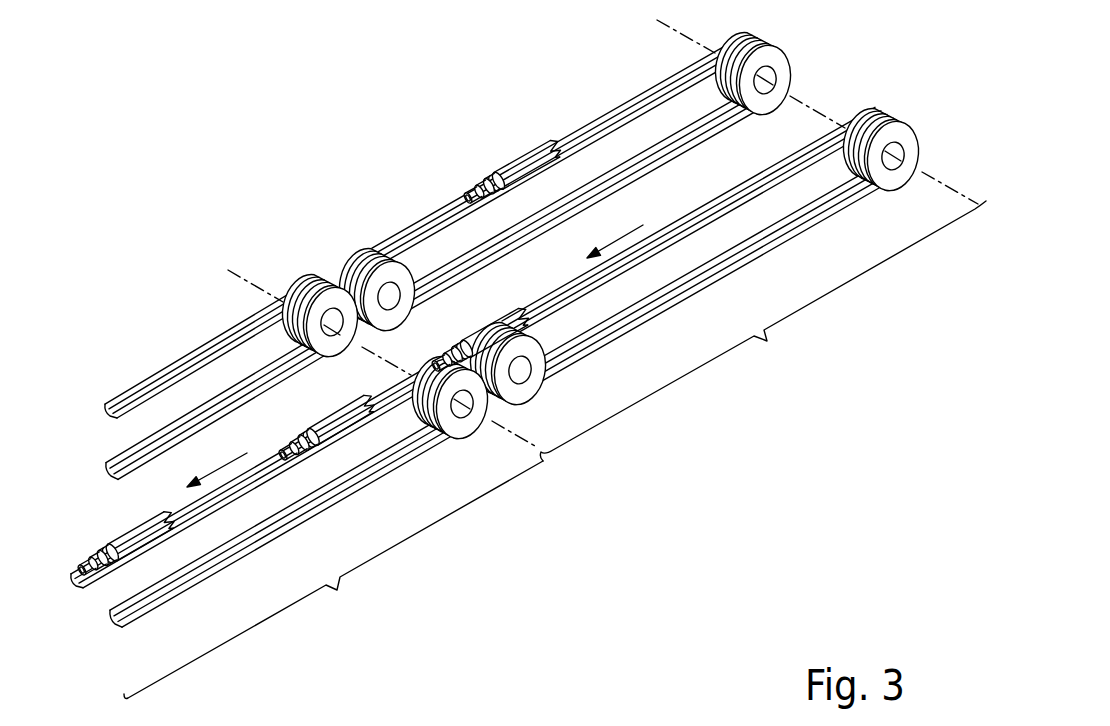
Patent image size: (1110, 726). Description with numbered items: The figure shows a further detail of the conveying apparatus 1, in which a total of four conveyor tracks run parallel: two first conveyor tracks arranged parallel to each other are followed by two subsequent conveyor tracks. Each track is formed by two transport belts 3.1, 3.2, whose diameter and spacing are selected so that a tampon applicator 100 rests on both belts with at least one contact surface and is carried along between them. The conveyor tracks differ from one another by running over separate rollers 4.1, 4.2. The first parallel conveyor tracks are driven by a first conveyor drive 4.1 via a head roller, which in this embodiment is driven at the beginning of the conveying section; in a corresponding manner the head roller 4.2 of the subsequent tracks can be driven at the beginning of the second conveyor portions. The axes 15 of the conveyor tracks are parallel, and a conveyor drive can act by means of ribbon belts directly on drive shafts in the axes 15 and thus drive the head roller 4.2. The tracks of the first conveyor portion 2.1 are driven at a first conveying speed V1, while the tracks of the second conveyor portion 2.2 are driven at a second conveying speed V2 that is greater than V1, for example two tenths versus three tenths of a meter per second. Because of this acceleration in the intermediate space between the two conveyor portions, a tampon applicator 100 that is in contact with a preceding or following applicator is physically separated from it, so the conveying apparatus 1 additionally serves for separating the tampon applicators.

The conveying apparatus 1 is at (227, 110).
The first conveyor portion 2.1 is at (662, 363).
The second conveyor portion 2.2 is at (307, 448).
The transport belt 3.1 is at (830, 214).
The transport belt 3.2 is at (814, 143).
The roller / first conveyor drive 4.1 is at (787, 58).
The head roller 4.2 is at (320, 322).
The axes 15 is at (938, 180).
The tampon applicator 100 is at (509, 172).
The first conveying speed V1 is at (620, 237).
The second conveying speed V2 is at (216, 470).